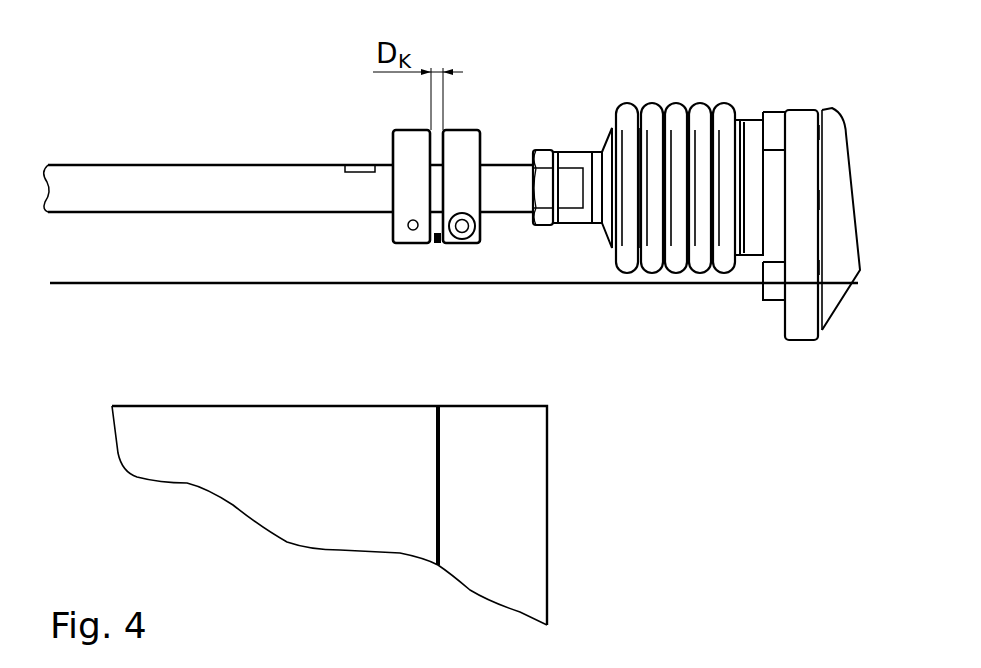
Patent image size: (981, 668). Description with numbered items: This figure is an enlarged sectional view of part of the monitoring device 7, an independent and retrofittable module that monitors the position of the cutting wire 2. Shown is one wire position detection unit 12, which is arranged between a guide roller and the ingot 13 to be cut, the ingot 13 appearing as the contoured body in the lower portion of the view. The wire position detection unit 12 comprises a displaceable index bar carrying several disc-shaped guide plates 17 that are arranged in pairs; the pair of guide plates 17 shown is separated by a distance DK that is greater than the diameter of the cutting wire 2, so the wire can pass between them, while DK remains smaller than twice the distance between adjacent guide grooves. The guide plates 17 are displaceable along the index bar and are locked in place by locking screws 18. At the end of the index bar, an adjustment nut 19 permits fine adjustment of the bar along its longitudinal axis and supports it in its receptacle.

The wire position detection unit 12 is at (257, 156).
The guide plates 17 is at (407, 147).
The monitoring device 7 is at (693, 197).
The cutting wire 2 is at (438, 244).
The locking screws 18 is at (466, 239).
The adjustment nut 19 is at (544, 226).
The ingot 13 is at (276, 416).